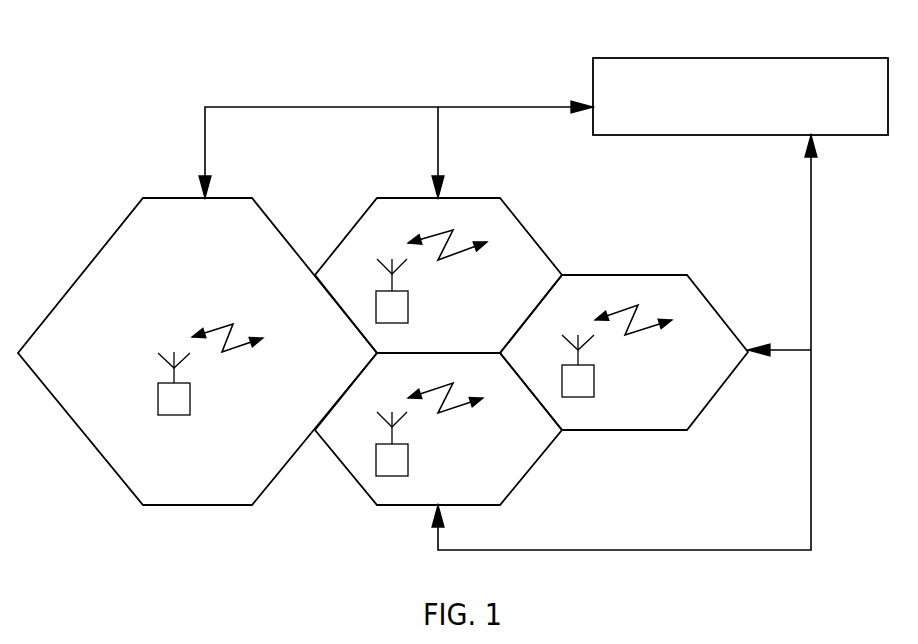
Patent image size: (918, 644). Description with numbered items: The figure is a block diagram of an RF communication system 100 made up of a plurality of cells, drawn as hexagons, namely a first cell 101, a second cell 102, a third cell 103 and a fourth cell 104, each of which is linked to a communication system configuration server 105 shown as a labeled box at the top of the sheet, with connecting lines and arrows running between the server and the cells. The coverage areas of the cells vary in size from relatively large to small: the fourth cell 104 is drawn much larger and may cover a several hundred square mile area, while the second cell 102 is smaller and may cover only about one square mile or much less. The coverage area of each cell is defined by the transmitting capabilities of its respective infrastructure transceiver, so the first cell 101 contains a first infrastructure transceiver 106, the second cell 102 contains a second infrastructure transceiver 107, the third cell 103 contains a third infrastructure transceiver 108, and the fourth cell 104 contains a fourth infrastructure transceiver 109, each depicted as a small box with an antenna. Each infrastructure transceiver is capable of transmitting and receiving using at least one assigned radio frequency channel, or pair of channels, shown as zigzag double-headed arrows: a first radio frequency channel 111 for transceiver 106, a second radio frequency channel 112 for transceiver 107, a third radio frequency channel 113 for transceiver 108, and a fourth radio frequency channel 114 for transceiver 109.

The RF communication system 100 is at (293, 64).
The cell 101 is at (485, 198).
The cell 102 is at (673, 273).
The cell 103 is at (390, 505).
The cell 104 is at (203, 507).
The communication system configuration server 105 is at (687, 57).
The infrastructure transceiver 106 is at (408, 305).
The infrastructure transceiver 107 is at (594, 380).
The infrastructure transceiver 108 is at (408, 458).
The infrastructure transceiver 109 is at (190, 398).
The radio frequency channel 111 is at (438, 260).
The radio frequency channel 112 is at (625, 335).
The radio frequency channel 113 is at (438, 413).
The radio frequency channel 114 is at (233, 324).